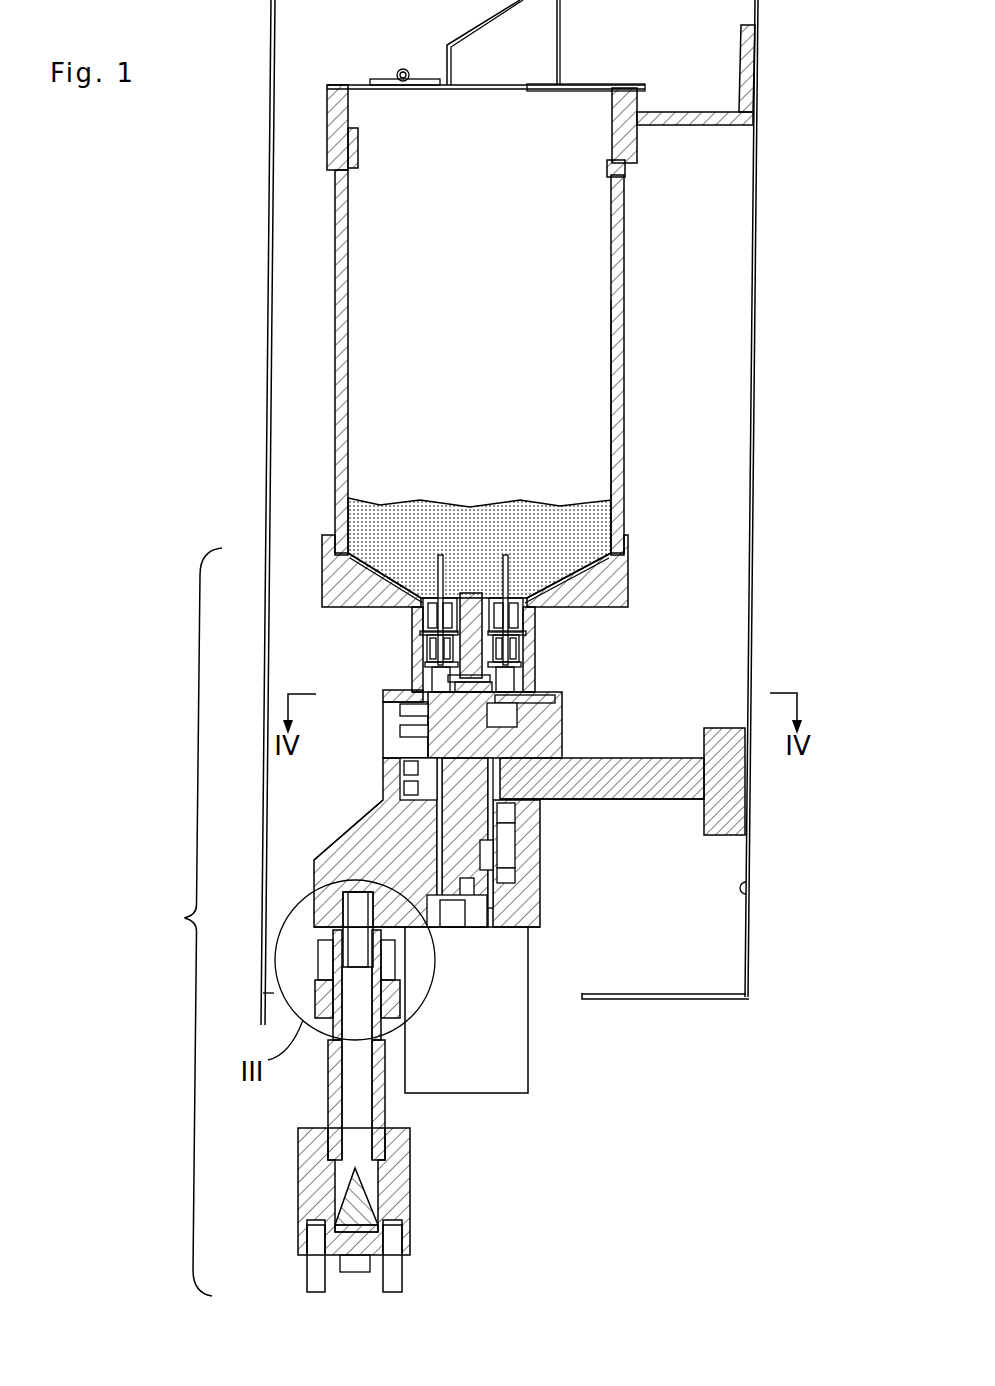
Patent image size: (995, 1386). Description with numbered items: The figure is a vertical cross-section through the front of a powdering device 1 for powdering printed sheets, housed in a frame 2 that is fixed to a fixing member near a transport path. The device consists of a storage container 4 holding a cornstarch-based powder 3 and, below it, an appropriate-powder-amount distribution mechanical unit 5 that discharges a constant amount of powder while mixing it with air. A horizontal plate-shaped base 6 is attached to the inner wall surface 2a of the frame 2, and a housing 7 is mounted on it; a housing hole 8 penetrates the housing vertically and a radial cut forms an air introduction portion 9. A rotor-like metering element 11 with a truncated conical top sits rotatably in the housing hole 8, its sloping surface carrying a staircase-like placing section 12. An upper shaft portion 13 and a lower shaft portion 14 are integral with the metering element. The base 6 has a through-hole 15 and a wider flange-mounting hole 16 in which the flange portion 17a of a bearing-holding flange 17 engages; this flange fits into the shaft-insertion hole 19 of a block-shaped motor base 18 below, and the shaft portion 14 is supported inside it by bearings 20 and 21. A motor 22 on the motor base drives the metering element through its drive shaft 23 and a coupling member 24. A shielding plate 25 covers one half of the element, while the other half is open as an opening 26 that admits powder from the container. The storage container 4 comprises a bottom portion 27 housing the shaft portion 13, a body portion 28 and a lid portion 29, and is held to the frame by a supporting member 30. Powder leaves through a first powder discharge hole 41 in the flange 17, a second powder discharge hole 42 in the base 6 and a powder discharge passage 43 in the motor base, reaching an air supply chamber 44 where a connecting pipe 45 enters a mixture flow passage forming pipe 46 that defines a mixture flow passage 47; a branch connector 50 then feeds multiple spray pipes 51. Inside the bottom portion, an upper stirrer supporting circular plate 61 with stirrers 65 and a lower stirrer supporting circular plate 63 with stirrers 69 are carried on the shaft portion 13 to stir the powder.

The powdering device 1 is at (312, 240).
The frame 2 is at (756, 290).
The inner wall surface 2a is at (752, 893).
The powder 3 is at (592, 518).
The storage container 4 is at (630, 378).
The appropriate-powder-amount distribution mechanical unit 5 is at (194, 922).
The base 6 is at (668, 802).
The housing 7 is at (564, 722).
The housing hole 8 is at (530, 748).
The air introduction portion 9 is at (445, 748).
The metering element 11 is at (427, 737).
The placing section 12 is at (433, 712).
The shaft portion 13 is at (450, 682).
The shaft portion 14 is at (365, 870).
The through-hole 15 is at (515, 832).
The flange-mounting hole 16 is at (602, 801).
The bearing-holding flange 17 is at (530, 822).
The flange portion 17a is at (545, 795).
The motor base 18 is at (542, 912).
The shaft-insertion hole 19 is at (520, 882).
The bearing 20 is at (640, 760).
The bearing 21 is at (530, 872).
The motor 22 is at (530, 1060).
The drive shaft 23 is at (492, 935).
The coupling member 24 is at (502, 922).
The shielding plate 25 is at (414, 690).
The opening 26 is at (522, 698).
The bottom portion 27 is at (542, 652).
The body portion 28 is at (626, 438).
The lid portion 29 is at (598, 85).
The supporting member 30 is at (697, 128).
The first powder discharge hole 41 is at (420, 778).
The second powder discharge hole 42 is at (402, 790).
The powder discharge passage 43 is at (380, 845).
The air supply chamber 44 is at (320, 975).
The connecting pipe 45 is at (320, 945).
The mixture flow passage forming pipe 46 is at (386, 1105).
The mixture flow passage 47 is at (356, 1072).
The branch connector 50 is at (402, 1170).
The spray pipes 51 is at (305, 1278).
The upper stirrer supporting circular plate 61 is at (525, 640).
The lower stirrer supporting circular plate 63 is at (525, 680).
The stirrers 65 is at (510, 556).
The stirrers 69 is at (428, 650).